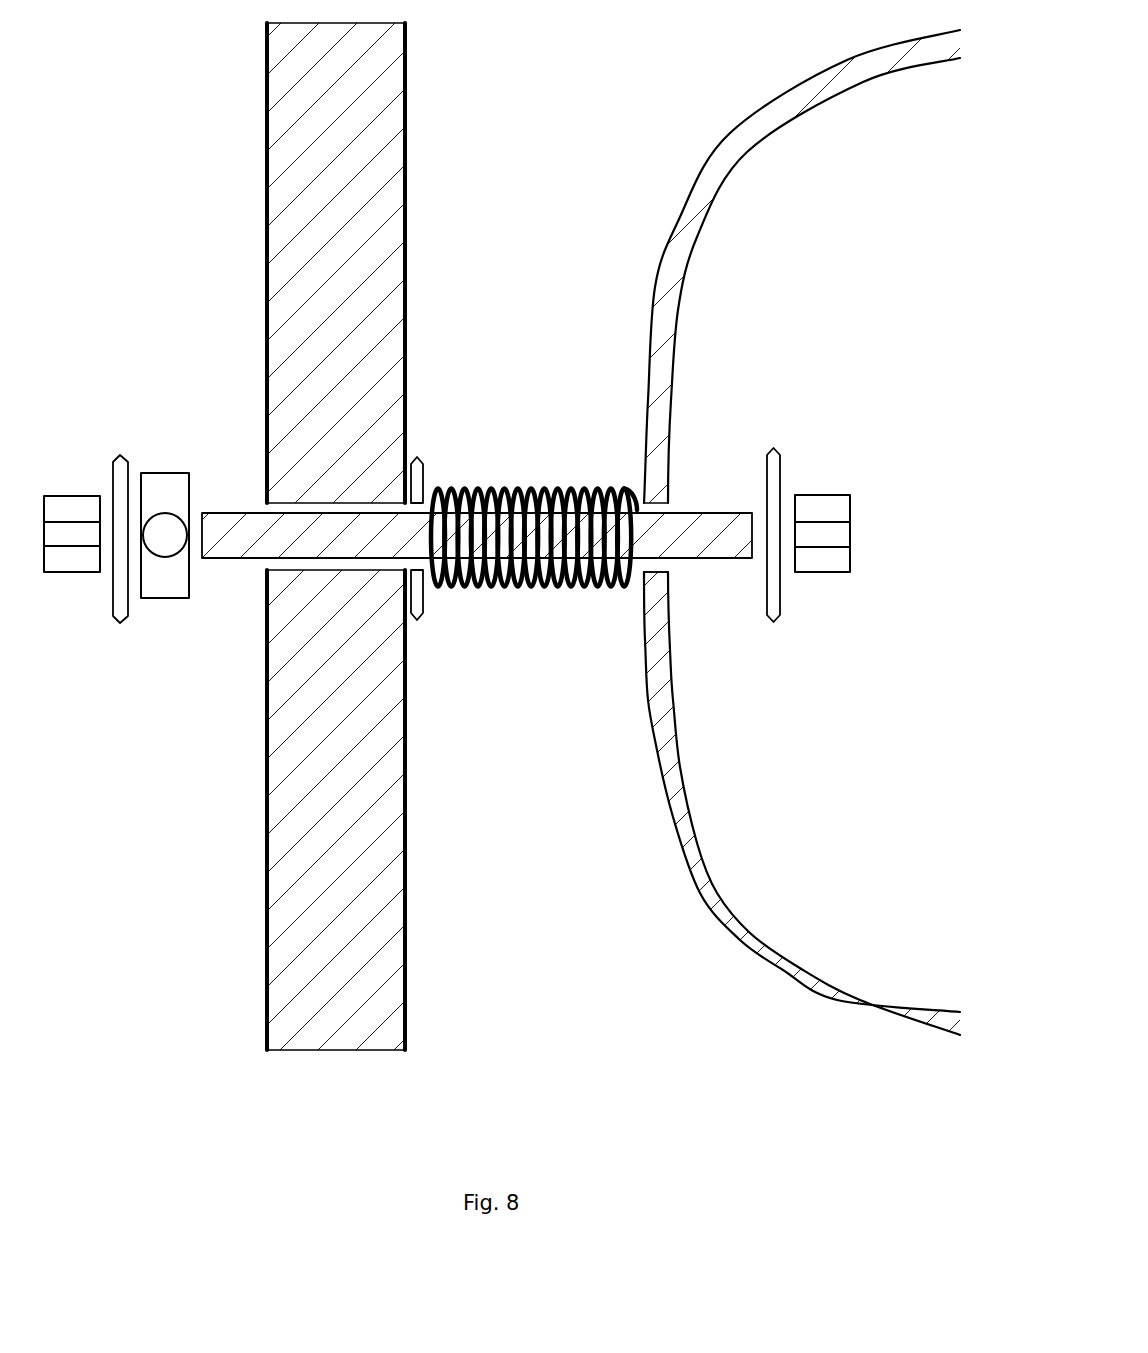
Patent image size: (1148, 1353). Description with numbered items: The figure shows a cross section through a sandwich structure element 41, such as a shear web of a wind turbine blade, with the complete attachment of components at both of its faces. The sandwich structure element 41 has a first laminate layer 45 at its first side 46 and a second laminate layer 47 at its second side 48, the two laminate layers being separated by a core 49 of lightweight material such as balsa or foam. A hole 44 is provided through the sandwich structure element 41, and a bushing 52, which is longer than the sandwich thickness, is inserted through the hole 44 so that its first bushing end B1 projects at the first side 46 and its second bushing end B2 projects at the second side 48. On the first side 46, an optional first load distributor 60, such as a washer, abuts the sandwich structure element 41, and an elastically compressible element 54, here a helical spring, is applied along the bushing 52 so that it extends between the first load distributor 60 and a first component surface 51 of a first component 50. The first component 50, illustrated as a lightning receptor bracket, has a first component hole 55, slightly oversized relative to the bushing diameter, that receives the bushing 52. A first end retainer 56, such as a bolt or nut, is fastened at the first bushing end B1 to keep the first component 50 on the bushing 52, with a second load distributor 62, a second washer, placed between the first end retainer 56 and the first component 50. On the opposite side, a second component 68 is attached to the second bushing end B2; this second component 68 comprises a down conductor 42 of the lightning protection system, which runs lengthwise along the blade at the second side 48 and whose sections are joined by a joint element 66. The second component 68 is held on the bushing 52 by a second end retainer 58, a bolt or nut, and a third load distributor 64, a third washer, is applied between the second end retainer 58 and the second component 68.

The sandwich structure element 41 is at (222, 197).
The down conductor 42 is at (163, 543).
The hole 44 is at (270, 568).
The first laminate layer 45 is at (407, 183).
The first side 46 is at (419, 111).
The second laminate layer 47 is at (267, 183).
The second side 48 is at (250, 108).
The core 49 is at (388, 242).
The first component 50 is at (693, 225).
The first component surface 51 is at (629, 623).
The bushing 52 is at (670, 528).
The elastically compressible element 54 is at (557, 430).
The first component hole 55 is at (670, 565).
The first end retainer 56 is at (835, 505).
The second end retainer 58 is at (85, 508).
The first load distributor 60 is at (420, 463).
The second load distributor 62 is at (780, 463).
The third load distributor 64 is at (120, 457).
The joint element 66 is at (168, 578).
The second component 68 is at (162, 613).
The first bushing end B1 is at (755, 513).
The second bushing end B2 is at (200, 513).